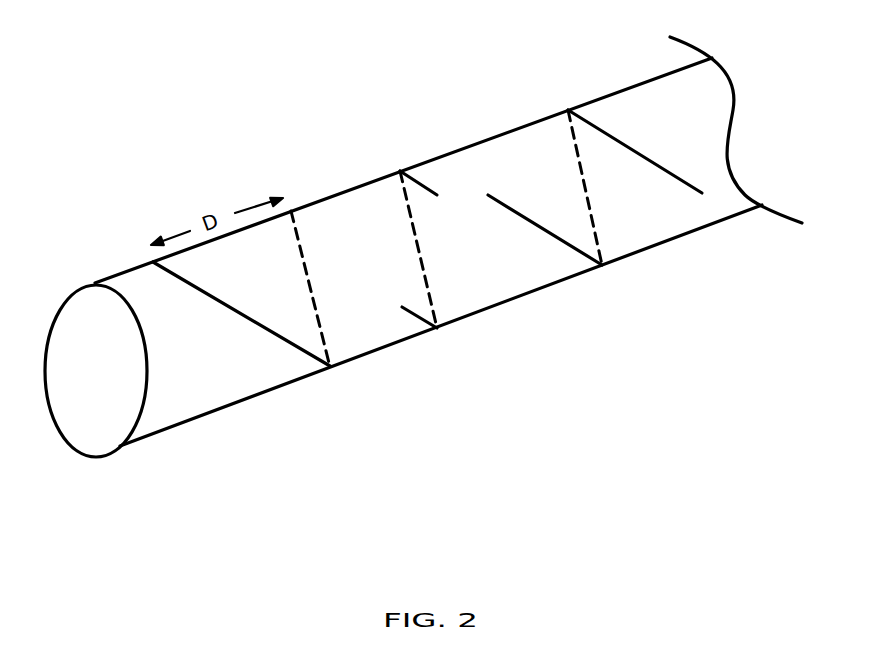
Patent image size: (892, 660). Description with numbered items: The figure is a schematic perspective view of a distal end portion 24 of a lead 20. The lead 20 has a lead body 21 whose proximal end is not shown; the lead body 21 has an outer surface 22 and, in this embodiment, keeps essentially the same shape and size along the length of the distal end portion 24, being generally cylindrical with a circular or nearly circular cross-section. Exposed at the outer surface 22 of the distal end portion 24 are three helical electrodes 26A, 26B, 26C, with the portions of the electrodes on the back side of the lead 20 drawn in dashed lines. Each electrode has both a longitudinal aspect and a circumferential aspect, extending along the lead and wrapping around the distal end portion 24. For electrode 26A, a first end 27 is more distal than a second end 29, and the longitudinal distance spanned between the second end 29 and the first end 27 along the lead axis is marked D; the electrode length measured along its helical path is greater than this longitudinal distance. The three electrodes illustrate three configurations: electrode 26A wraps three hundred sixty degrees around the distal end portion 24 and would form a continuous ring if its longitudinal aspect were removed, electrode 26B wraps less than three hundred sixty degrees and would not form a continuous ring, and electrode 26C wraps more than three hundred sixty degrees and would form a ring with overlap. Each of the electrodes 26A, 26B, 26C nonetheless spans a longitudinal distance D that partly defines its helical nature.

The lead 20 is at (177, 83).
The lead body 21 is at (133, 433).
The outer surface 22 is at (382, 352).
The distal end portion 24 is at (480, 332).
The electrode 26A is at (240, 314).
The electrode 26B is at (423, 180).
The electrode 26C is at (668, 175).
The first end 27 is at (150, 256).
The second end 29 is at (290, 205).